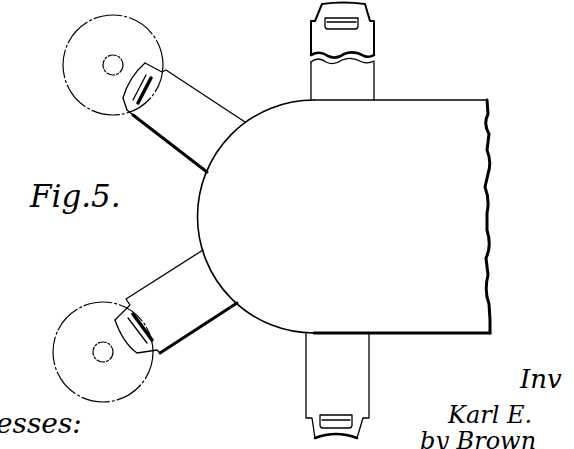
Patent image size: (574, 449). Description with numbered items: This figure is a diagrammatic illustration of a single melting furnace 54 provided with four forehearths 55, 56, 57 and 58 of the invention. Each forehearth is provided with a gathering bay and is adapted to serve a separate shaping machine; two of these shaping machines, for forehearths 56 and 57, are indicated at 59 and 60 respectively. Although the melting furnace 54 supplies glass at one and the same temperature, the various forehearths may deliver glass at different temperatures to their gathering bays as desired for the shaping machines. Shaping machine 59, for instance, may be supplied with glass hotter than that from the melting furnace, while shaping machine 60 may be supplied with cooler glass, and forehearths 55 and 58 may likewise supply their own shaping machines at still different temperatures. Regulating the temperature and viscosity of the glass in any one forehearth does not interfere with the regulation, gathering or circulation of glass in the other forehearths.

The melting furnace 54 is at (472, 208).
The forehearth 55 is at (358, 78).
The forehearth 56 is at (187, 94).
The forehearth 57 is at (164, 282).
The forehearth 58 is at (315, 366).
The shaping machine 59 is at (73, 65).
The shaping machine 60 is at (62, 349).